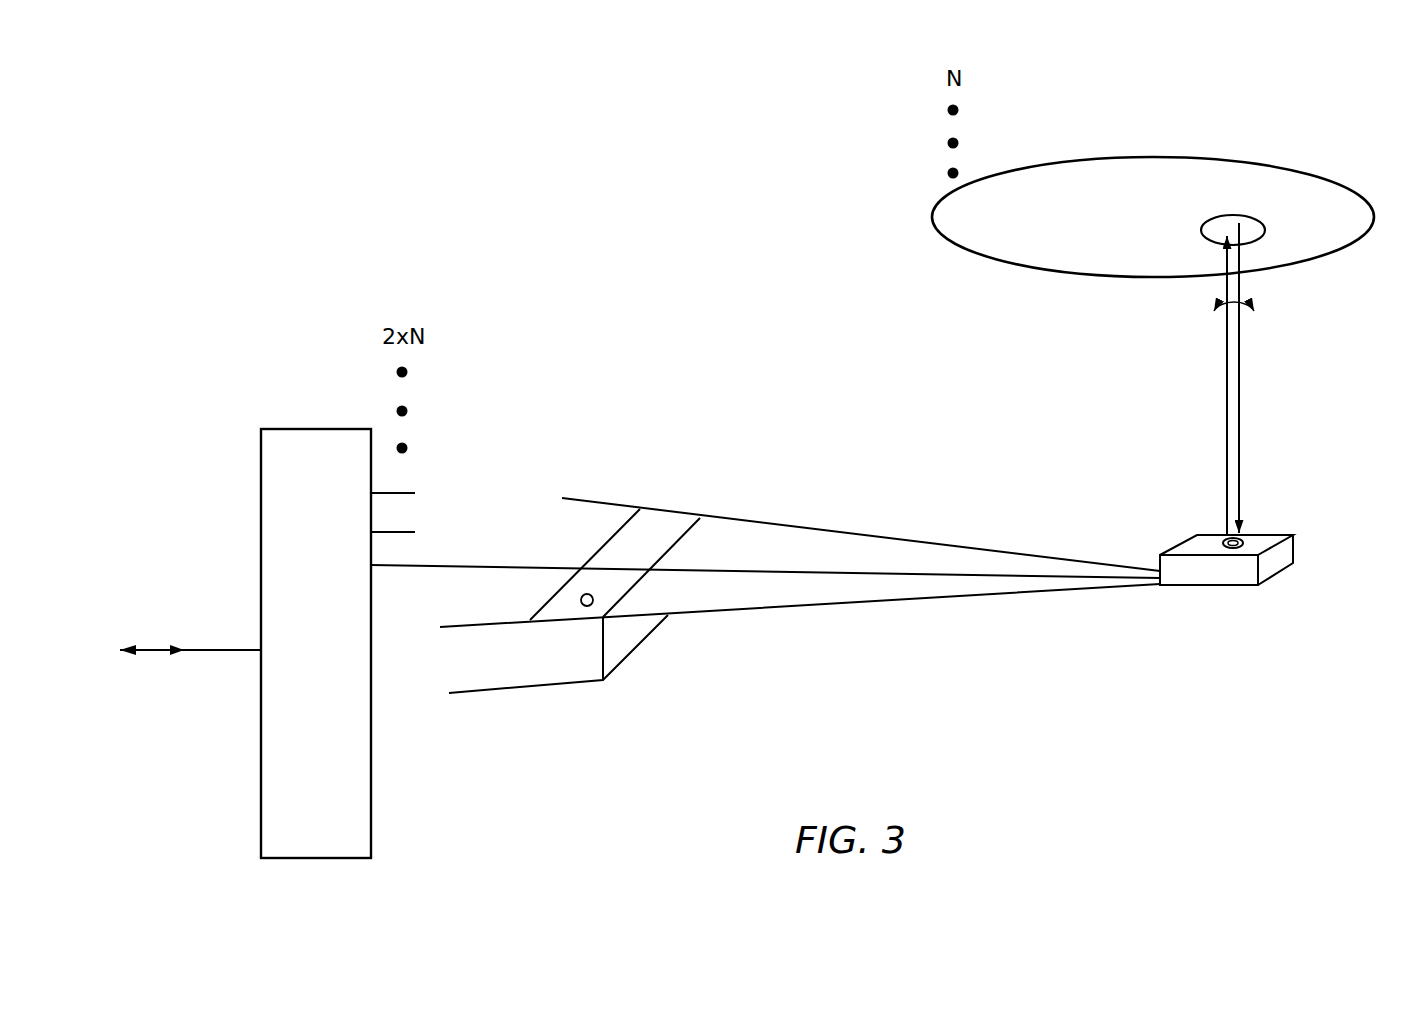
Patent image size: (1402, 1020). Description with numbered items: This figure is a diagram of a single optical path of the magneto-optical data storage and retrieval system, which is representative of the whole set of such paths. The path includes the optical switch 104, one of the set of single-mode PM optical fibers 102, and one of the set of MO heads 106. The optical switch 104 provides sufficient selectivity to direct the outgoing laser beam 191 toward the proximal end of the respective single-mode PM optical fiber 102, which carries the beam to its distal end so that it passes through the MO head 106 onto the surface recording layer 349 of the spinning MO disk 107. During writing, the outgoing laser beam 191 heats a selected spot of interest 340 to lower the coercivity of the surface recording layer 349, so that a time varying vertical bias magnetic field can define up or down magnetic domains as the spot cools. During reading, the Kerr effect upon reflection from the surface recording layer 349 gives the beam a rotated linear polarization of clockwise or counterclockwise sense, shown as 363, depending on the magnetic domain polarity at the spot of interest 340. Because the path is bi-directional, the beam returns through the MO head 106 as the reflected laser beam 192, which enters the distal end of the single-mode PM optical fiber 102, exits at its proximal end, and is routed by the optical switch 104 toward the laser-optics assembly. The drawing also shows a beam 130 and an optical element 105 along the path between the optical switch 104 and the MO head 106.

The single-mode PM optical fiber 102 is at (462, 563).
The optical switch 104 is at (287, 427).
The beam splitter / optical element 105 is at (522, 695).
The MO head 106 is at (1213, 585).
The spinning MO disk 107 is at (985, 259).
The light beam 130 is at (830, 606).
The outgoing laser beam 191 is at (172, 654).
The reflected laser beam 192 is at (134, 647).
The spot of interest 340 is at (1236, 213).
The surface recording layer 349 is at (1145, 181).
The rotated linear polarization sense 363 is at (1257, 304).